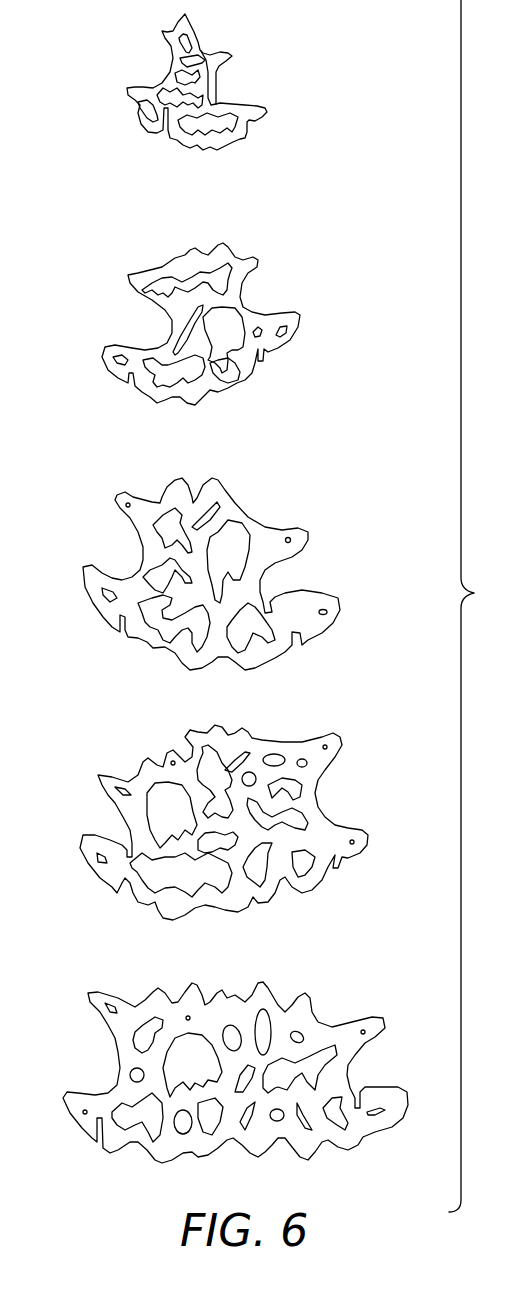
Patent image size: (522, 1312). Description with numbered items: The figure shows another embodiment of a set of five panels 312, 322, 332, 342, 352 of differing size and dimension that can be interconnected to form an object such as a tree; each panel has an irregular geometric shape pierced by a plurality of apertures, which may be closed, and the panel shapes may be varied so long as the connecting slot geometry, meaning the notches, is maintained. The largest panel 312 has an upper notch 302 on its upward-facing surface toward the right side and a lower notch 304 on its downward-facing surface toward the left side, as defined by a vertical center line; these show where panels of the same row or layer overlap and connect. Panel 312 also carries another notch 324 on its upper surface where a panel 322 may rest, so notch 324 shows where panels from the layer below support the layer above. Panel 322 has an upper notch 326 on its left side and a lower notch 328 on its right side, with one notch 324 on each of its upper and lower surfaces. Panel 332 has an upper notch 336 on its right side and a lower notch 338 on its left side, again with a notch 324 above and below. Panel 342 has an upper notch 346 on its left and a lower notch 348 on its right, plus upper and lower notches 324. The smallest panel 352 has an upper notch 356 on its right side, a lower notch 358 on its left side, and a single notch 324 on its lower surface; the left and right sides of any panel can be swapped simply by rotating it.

The upper notch 302 is at (358, 1087).
The lower notch 304 is at (98, 1142).
The panel 312 is at (312, 995).
The panel 322 is at (332, 810).
The notch 324 is at (202, 248).
The upper notch 326 is at (125, 847).
The lower notch 328 is at (335, 868).
The panel 332 is at (313, 520).
The upper notch 336 is at (268, 605).
The lower notch 338 is at (122, 620).
The panel 342 is at (307, 303).
The upper notch 346 is at (197, 250).
The lower notch 348 is at (265, 363).
The panel 352 is at (276, 92).
The upper notch 356 is at (214, 90).
The lower notch 358 is at (168, 128).